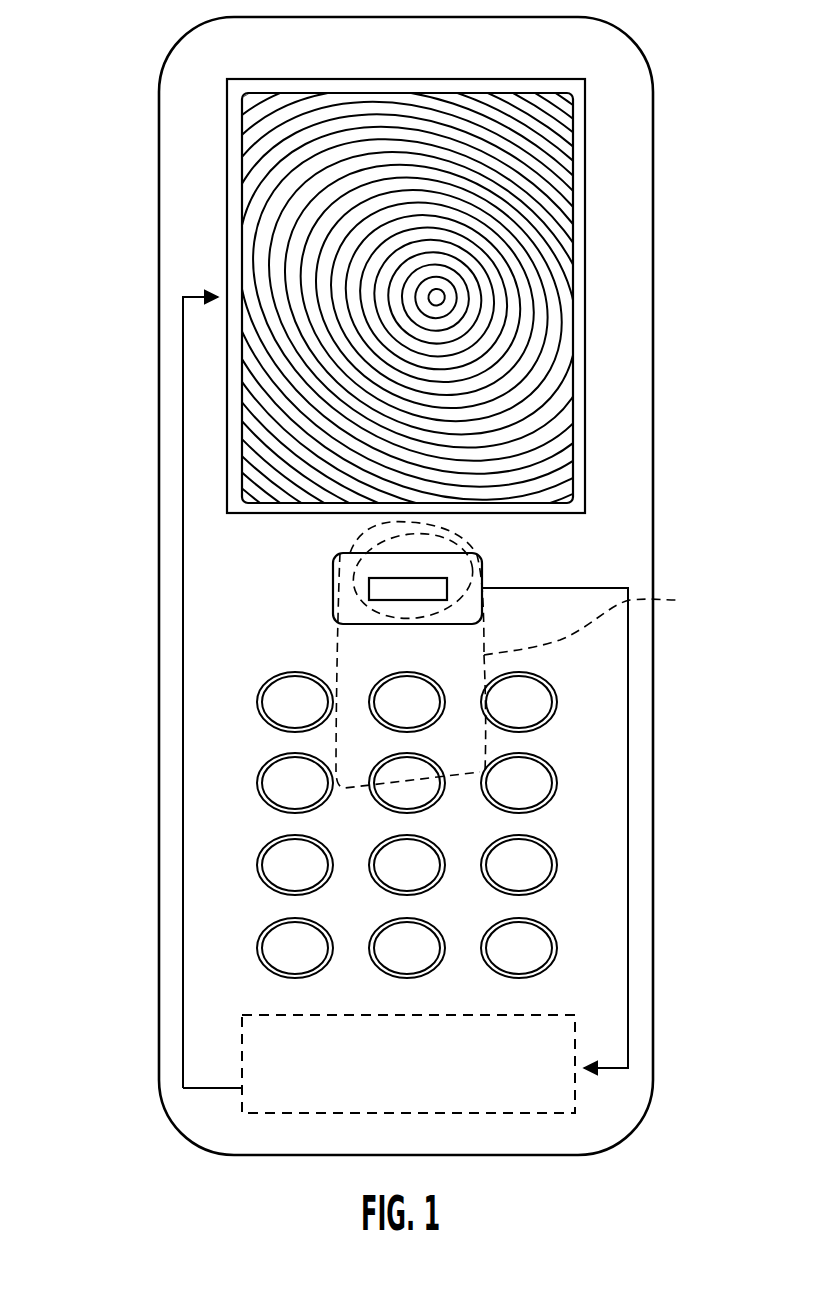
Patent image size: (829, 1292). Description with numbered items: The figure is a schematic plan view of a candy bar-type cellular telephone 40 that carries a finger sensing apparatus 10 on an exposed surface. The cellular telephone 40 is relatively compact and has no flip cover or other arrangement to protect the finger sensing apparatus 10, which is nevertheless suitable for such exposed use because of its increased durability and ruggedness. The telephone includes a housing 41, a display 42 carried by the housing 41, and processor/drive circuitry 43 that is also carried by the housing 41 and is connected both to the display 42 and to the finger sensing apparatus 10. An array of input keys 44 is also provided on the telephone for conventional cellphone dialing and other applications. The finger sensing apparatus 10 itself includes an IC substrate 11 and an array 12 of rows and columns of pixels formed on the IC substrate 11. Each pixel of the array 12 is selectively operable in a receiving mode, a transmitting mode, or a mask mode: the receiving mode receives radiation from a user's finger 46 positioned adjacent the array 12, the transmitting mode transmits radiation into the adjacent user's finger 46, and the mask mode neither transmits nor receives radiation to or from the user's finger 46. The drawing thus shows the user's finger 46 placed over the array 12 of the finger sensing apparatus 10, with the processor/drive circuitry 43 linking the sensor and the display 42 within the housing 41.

The cellular telephone 40 is at (124, 80).
The housing 41 is at (158, 288).
The display 42 is at (285, 503).
The finger sensing apparatus 10 is at (430, 580).
The IC substrate 11 is at (352, 605).
The array of pixels 12 is at (360, 590).
The processor/drive circuitry 43 is at (575, 1038).
The input keys 44 is at (525, 708).
The user's finger 46 is at (519, 655).